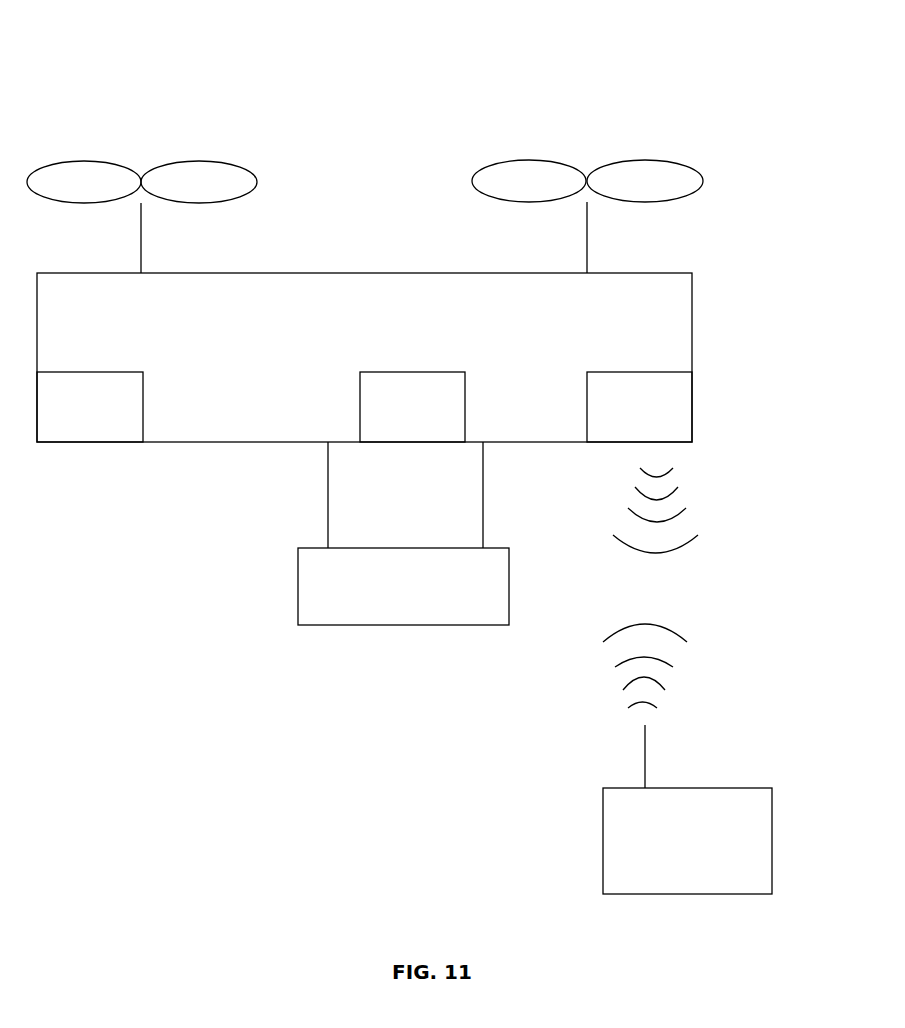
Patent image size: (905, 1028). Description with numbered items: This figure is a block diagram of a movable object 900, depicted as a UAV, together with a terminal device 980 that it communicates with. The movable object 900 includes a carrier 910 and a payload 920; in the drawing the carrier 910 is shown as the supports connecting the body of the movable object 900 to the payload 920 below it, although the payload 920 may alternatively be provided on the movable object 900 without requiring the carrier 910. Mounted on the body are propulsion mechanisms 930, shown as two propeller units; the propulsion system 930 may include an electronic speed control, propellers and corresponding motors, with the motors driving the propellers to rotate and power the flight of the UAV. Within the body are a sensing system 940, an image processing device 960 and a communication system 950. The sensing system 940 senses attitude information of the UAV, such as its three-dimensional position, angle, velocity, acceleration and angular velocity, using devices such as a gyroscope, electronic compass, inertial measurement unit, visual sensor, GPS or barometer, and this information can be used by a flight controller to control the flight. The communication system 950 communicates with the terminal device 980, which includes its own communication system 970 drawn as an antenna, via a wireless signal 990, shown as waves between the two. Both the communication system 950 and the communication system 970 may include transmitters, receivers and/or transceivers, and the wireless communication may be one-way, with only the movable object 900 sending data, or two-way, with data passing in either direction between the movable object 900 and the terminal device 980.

The movable object 900 is at (667, 75).
The carrier 910 is at (326, 484).
The payload 920 is at (403, 586).
The propulsion mechanisms 930 is at (190, 155).
The sensing system 940 is at (90, 407).
The communication system 950 is at (639, 407).
The image processing device 960 is at (412, 407).
The communication system 970 is at (645, 747).
The terminal device 980 is at (687, 841).
The wireless signal 990 is at (710, 531).